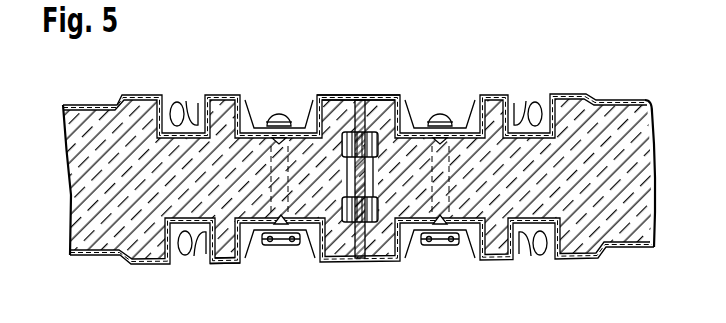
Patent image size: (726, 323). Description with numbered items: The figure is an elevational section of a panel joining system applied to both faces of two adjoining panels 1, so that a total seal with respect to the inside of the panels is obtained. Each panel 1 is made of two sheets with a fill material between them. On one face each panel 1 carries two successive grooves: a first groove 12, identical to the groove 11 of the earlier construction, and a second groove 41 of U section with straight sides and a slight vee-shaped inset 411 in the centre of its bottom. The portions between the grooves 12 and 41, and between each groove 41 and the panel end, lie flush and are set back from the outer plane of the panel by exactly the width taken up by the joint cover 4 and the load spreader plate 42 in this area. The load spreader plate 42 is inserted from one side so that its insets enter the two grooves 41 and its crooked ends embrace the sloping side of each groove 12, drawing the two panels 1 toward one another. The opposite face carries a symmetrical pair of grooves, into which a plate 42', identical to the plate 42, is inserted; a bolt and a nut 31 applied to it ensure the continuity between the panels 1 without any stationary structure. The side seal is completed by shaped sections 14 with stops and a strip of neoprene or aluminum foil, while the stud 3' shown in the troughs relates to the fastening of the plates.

The panel 1 is at (112, 140).
The joint cover 4 is at (209, 96).
The groove 11 is at (176, 262).
The first groove 12 is at (176, 98).
The shaped section 14 is at (352, 130).
The nut 31 is at (281, 245).
The fastening stud 3' is at (381, 180).
The second groove 41 is at (257, 97).
The inset 411 is at (444, 112).
The load spreader plate 42 is at (358, 73).
The plate 42' is at (210, 281).